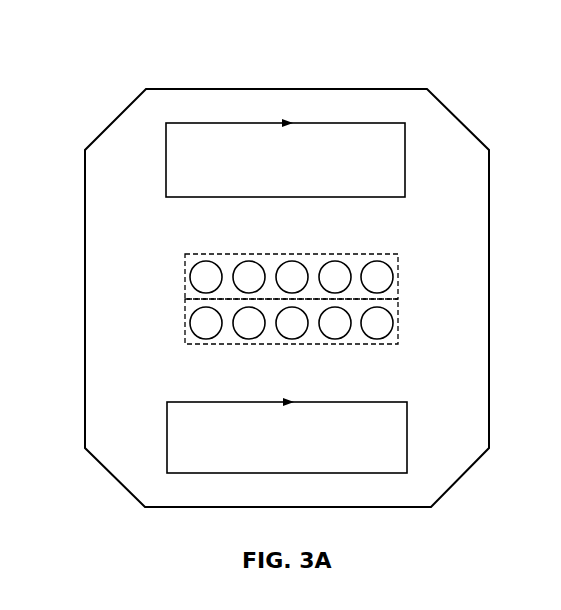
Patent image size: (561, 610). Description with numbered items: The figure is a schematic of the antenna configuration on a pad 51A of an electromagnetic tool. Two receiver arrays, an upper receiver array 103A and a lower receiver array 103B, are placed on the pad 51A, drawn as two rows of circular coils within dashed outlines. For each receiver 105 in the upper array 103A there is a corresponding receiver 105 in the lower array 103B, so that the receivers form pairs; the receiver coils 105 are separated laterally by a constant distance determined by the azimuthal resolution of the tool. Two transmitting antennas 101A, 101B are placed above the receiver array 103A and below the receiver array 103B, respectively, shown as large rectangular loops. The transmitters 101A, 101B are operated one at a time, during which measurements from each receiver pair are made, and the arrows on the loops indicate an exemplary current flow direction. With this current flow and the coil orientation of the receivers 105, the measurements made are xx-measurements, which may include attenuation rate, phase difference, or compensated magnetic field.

The pad 51A is at (100, 90).
The transmitting antenna 101A is at (242, 122).
The transmitting antenna 101B is at (242, 401).
The upper receiver array 103A is at (184, 281).
The lower receiver array 103B is at (184, 328).
The receiver 105 is at (376, 278).